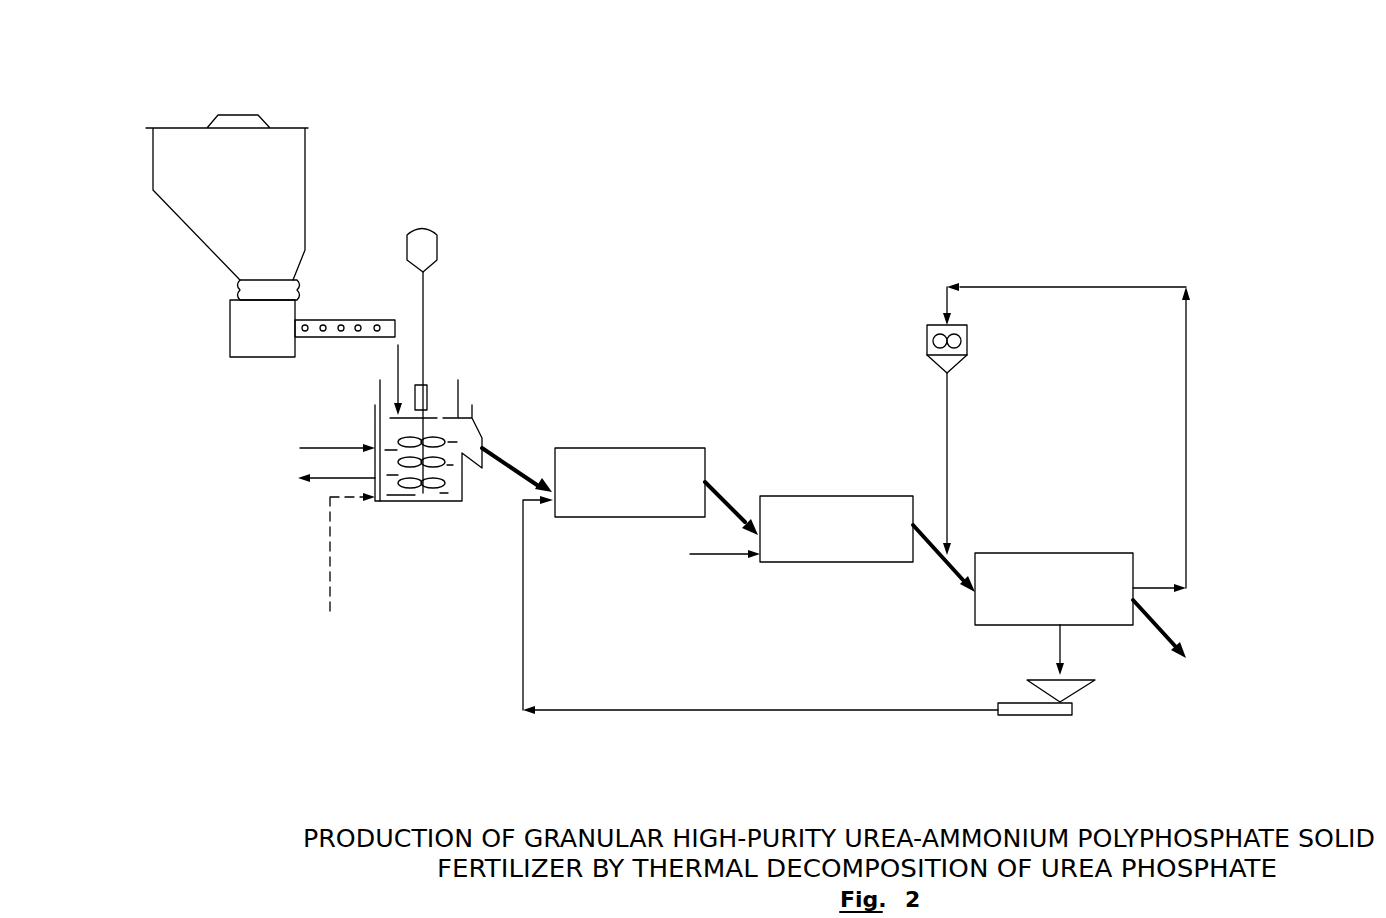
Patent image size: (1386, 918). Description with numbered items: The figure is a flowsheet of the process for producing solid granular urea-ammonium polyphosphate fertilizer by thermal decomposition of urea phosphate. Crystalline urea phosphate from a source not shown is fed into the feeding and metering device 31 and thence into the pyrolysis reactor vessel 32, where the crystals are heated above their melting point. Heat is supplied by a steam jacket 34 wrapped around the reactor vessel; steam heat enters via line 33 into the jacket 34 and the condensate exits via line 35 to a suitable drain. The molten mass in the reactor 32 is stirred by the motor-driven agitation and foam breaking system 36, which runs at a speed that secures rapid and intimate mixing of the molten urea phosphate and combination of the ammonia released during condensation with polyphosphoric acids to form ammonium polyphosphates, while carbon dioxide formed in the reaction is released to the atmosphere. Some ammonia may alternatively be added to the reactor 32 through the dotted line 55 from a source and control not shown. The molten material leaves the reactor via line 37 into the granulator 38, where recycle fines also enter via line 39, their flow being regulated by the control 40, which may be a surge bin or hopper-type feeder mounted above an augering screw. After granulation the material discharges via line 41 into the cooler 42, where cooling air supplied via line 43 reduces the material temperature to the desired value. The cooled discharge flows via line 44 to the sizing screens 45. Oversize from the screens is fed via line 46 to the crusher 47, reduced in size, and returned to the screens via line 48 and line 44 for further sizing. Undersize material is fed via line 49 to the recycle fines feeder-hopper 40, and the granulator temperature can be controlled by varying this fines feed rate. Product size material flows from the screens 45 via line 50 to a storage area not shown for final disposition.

The feeding and metering device 31 is at (308, 146).
The pyrolysis reactor vessel 32 is at (318, 337).
The steam heat line 33 is at (302, 443).
The steam jacket 34 is at (468, 482).
The condensate line 35 is at (355, 482).
The motor-driven agitation and foam breaking system 36 is at (437, 240).
The reactor outlet line 37 is at (531, 468).
The granulator 38 is at (605, 447).
The recycle fines line 39 is at (523, 575).
The recycle fines feeder-hopper control 40 is at (1005, 717).
The granulator discharge line 41 is at (745, 485).
The cooler 42 is at (835, 492).
The cooling air line 43 is at (712, 558).
The cooler discharge line 44 is at (949, 572).
The sizing screens 45 is at (1040, 552).
The oversize line 46 is at (1186, 405).
The crusher 47 is at (925, 352).
The crusher return line 48 is at (947, 405).
The undersize line 49 is at (1057, 657).
The product line 50 is at (1150, 610).
The ammonia addition line 55 is at (329, 580).